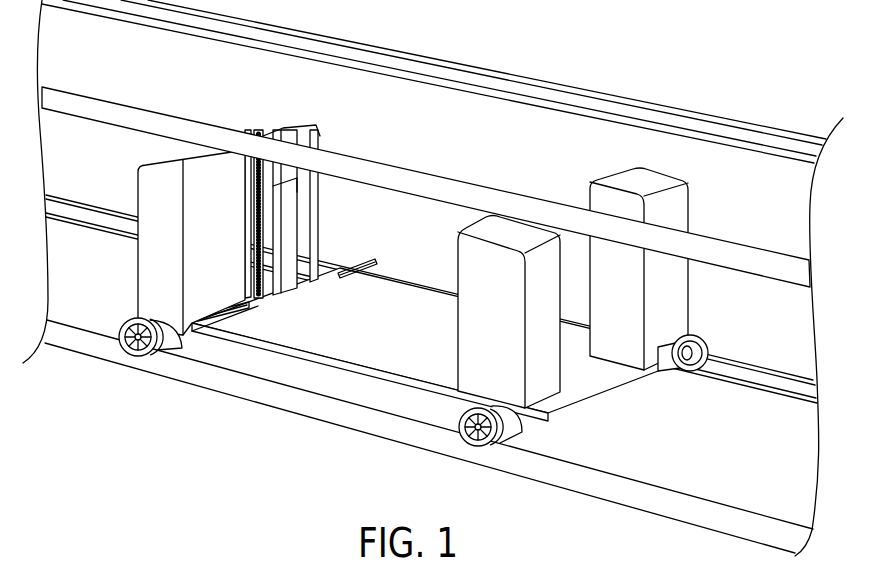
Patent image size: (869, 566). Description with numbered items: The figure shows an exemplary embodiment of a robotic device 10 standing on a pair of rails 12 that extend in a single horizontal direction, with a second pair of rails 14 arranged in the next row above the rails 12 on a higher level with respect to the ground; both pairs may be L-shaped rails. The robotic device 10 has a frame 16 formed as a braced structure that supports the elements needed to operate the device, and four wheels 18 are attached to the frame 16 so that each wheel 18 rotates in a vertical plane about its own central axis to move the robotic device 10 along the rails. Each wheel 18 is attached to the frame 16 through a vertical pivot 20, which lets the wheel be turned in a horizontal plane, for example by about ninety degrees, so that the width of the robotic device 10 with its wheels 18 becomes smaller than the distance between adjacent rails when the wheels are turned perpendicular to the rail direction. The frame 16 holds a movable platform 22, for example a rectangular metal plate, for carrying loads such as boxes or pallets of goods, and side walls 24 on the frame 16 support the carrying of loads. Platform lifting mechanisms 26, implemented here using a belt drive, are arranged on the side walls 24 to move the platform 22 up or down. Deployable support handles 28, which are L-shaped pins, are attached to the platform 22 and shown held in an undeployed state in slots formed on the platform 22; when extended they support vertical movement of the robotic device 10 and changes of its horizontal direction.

The robotic device 10 is at (437, 155).
The rails 12 is at (763, 365).
The rails 14 is at (773, 127).
The frame 16 is at (432, 420).
The wheels 18 is at (147, 356).
The vertical pivots 20 is at (171, 343).
The movable platform 22 is at (313, 340).
The side walls 24 is at (140, 193).
The platform lifting mechanisms 26 is at (304, 235).
The deployable support handles 28 is at (362, 264).